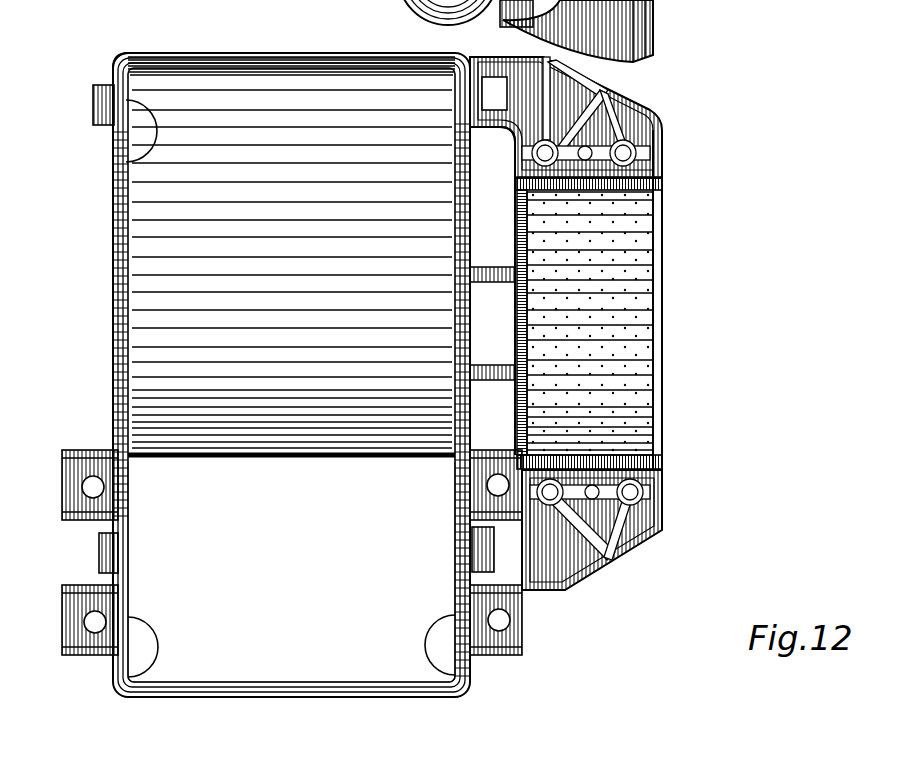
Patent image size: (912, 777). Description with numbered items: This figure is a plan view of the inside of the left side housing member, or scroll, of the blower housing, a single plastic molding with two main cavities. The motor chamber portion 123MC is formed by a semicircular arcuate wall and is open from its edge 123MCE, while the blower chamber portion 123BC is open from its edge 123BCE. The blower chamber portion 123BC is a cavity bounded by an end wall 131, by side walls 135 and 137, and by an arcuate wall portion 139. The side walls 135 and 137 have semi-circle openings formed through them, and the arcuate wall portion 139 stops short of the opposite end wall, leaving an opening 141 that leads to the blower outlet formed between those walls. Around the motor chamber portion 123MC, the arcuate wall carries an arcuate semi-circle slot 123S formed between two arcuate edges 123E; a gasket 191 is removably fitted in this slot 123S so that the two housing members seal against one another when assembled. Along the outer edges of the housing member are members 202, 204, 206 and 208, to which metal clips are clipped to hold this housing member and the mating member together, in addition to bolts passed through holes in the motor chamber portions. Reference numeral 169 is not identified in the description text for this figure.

The end wall 131 is at (178, 52).
The side wall 137 is at (300, 87).
The arcuate wall portion 139 is at (193, 267).
The opening 141 is at (320, 660).
The clip member 202 is at (93, 97).
The clip member 204 is at (99, 553).
The clip member 208 is at (494, 550).
The side wall 135 is at (127, 163).
The blower chamber portion 123BC is at (117, 387).
The blower chamber edge 123BCE is at (117, 54).
The motor chamber edge 123MCE is at (628, 84).
The clip member 206 is at (490, 80).
The arcuate edge 123E is at (660, 222).
The slot 123S is at (657, 417).
The motor chamber portion 123MC is at (658, 360).
The gasket 191 is at (607, 377).
The flange 169 is at (650, 33).